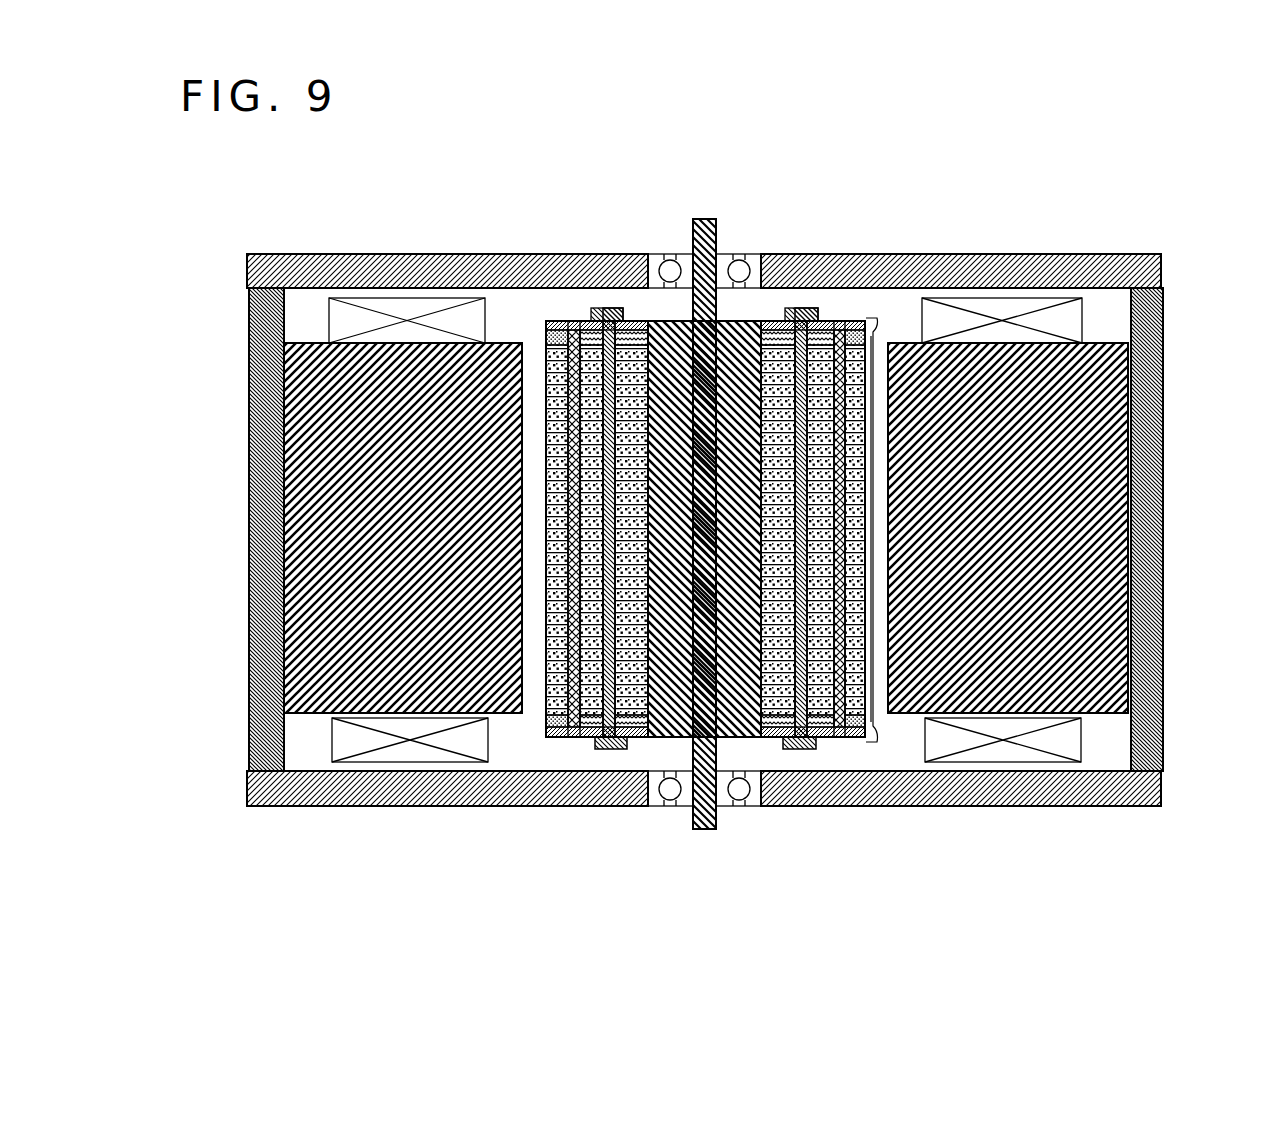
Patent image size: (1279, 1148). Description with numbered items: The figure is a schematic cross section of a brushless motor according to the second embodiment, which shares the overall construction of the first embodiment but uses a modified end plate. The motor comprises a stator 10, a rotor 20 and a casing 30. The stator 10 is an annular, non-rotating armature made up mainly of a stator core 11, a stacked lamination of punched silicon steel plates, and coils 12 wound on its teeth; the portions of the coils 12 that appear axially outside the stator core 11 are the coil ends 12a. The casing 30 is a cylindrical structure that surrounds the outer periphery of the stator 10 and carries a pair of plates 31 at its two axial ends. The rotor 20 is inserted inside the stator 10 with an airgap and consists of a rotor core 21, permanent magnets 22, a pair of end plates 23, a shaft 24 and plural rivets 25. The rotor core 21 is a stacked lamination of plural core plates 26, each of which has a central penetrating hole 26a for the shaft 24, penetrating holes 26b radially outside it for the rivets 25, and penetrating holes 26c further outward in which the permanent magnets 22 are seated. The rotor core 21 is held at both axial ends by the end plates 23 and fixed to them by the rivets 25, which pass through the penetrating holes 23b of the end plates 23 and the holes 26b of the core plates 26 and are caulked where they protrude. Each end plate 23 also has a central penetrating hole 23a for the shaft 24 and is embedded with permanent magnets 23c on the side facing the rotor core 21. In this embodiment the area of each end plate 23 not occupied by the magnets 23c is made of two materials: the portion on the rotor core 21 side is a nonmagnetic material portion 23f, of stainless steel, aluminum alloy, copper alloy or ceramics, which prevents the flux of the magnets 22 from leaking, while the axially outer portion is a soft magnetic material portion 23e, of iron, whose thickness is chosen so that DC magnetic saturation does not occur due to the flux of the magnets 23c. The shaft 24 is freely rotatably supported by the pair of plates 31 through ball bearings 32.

The stator 10 is at (303, 312).
The stator core 11 is at (310, 704).
The coils 12 is at (411, 752).
The coil ends 12a is at (413, 298).
The rotor 20 is at (557, 302).
The rotor core 21 is at (878, 742).
The permanent magnets 22 is at (545, 703).
The end plates 23 is at (866, 508).
The penetrating hole 23a is at (777, 318).
The penetrating holes 23b is at (830, 318).
The permanent magnets 23c is at (549, 724).
The soft magnetic material portion 23e is at (573, 740).
The nonmagnetic material portion 23f is at (588, 740).
The shaft 24 is at (713, 830).
The rivets 25 is at (617, 750).
The core plates 26 is at (585, 538).
The penetrating hole 26a is at (640, 320).
The penetrating holes 26b is at (628, 320).
The penetrating holes 26c is at (581, 320).
The casing 30 is at (262, 583).
The plates 31 is at (1178, 258).
The ball bearings 32 is at (737, 255).